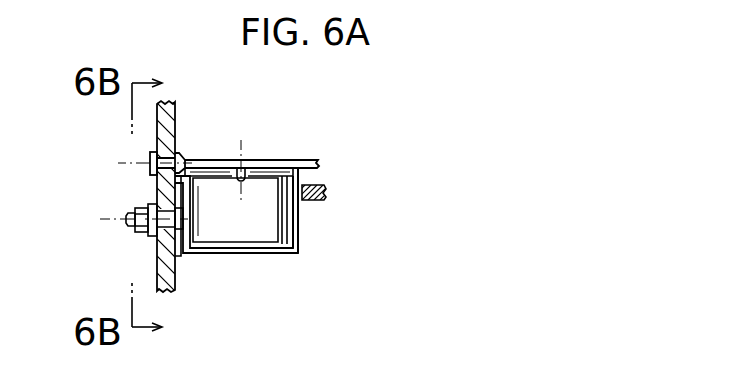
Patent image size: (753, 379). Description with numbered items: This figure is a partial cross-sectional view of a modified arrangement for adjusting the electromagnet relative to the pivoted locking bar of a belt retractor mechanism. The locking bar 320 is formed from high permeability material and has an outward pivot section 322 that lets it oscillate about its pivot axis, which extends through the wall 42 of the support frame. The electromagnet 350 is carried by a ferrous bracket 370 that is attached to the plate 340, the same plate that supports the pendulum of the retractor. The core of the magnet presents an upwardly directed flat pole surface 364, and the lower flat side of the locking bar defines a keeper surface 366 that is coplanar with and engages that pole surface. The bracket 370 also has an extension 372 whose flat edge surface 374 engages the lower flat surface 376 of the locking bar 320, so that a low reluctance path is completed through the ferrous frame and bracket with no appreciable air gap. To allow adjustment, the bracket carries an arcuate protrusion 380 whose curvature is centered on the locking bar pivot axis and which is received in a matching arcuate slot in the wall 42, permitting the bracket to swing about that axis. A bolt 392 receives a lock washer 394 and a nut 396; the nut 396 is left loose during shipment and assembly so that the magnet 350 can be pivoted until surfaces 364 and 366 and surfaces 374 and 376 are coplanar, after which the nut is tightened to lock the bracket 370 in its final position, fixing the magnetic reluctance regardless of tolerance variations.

The wall 42 is at (173, 122).
The locking bar 320 is at (290, 161).
The outward pivot section 322 is at (150, 157).
The plate 340 is at (320, 190).
The electromagnet 350 is at (284, 222).
The flat pole surface 364 is at (254, 170).
The keeper surface 366 is at (238, 172).
The bracket 370 is at (245, 255).
The extension 372 is at (298, 208).
The flat edge surface 374 is at (305, 182).
The lower flat surface 376 is at (265, 176).
The arcuate protrusion 380 is at (178, 222).
The bolt 392 is at (130, 212).
The lock washer 394 is at (152, 236).
The nut 396 is at (140, 233).